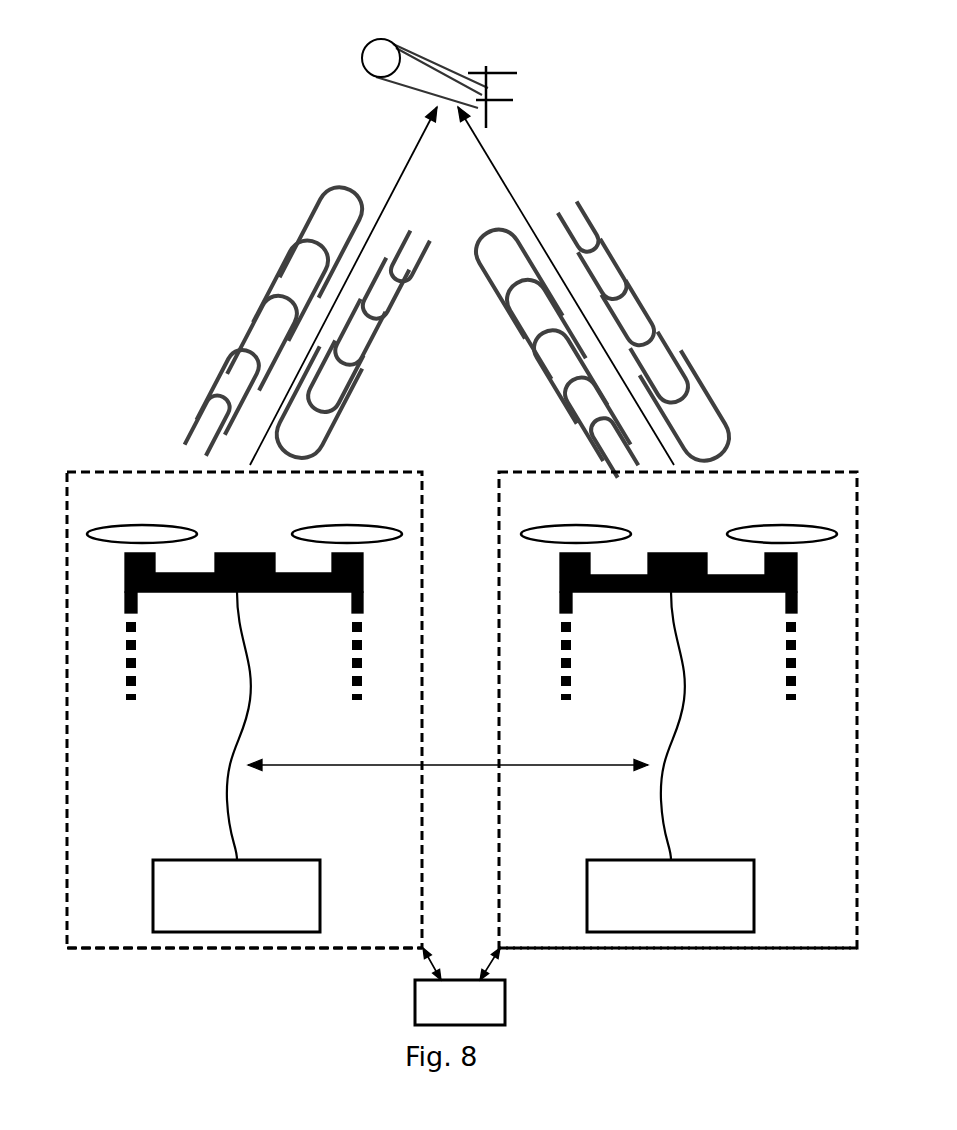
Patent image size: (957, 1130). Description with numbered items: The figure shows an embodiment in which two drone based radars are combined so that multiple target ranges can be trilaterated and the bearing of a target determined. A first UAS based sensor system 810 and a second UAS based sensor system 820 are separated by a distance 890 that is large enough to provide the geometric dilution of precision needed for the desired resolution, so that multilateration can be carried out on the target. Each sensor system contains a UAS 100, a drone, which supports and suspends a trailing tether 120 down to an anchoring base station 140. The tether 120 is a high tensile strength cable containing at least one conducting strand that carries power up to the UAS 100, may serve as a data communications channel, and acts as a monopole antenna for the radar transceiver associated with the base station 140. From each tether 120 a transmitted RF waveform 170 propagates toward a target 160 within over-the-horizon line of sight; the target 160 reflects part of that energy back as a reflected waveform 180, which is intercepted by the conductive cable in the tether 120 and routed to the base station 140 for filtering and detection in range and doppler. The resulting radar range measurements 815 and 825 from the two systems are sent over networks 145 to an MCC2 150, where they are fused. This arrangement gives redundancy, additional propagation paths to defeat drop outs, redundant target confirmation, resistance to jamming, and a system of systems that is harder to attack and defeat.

The UAS 100 is at (462, 593).
The tether 120 is at (434, 726).
The base station 140 is at (453, 896).
The networks 145 is at (462, 972).
The MCC2 150 is at (460, 986).
The target 160 is at (443, 62).
The transmitted RF waveform 170 is at (412, 332).
The reflected waveform 180 is at (503, 331).
The first UAS based sensor system 810 is at (163, 470).
The radar range measurement 815 is at (402, 157).
The second UAS based sensor system 820 is at (767, 470).
The radar range measurement 825 is at (500, 160).
The distance 890 is at (448, 779).